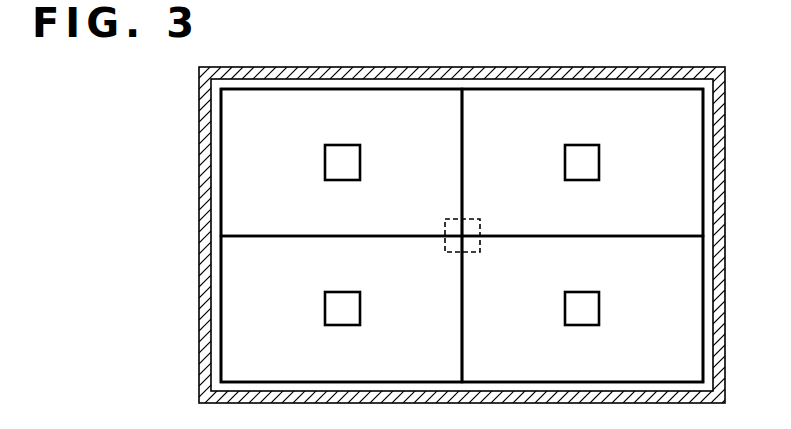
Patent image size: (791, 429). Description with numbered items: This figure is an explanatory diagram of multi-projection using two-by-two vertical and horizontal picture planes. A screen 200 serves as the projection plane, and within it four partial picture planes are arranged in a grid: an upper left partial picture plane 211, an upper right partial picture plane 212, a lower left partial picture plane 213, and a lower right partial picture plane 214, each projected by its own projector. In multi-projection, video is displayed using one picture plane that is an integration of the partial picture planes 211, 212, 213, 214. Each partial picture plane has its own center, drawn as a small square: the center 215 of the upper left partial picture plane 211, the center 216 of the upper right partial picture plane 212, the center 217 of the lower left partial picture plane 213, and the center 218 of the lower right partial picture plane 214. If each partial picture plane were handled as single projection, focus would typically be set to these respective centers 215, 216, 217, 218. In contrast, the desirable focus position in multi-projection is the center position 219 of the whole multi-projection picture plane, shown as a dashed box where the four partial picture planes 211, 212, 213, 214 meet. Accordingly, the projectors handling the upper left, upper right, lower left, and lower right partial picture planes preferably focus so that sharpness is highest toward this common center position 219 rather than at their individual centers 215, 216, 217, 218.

The screen 200 is at (675, 67).
The upper left partial picture plane 211 is at (262, 90).
The upper right partial picture plane 212 is at (664, 90).
The lower left partial picture plane 213 is at (262, 382).
The lower right partial picture plane 214 is at (652, 382).
The center of upper left partial picture plane 215 is at (344, 145).
The center of upper right partial picture plane 216 is at (586, 145).
The center of lower left partial picture plane 217 is at (344, 292).
The center of lower right partial picture plane 218 is at (586, 292).
The center position of multi-projection 219 is at (469, 219).